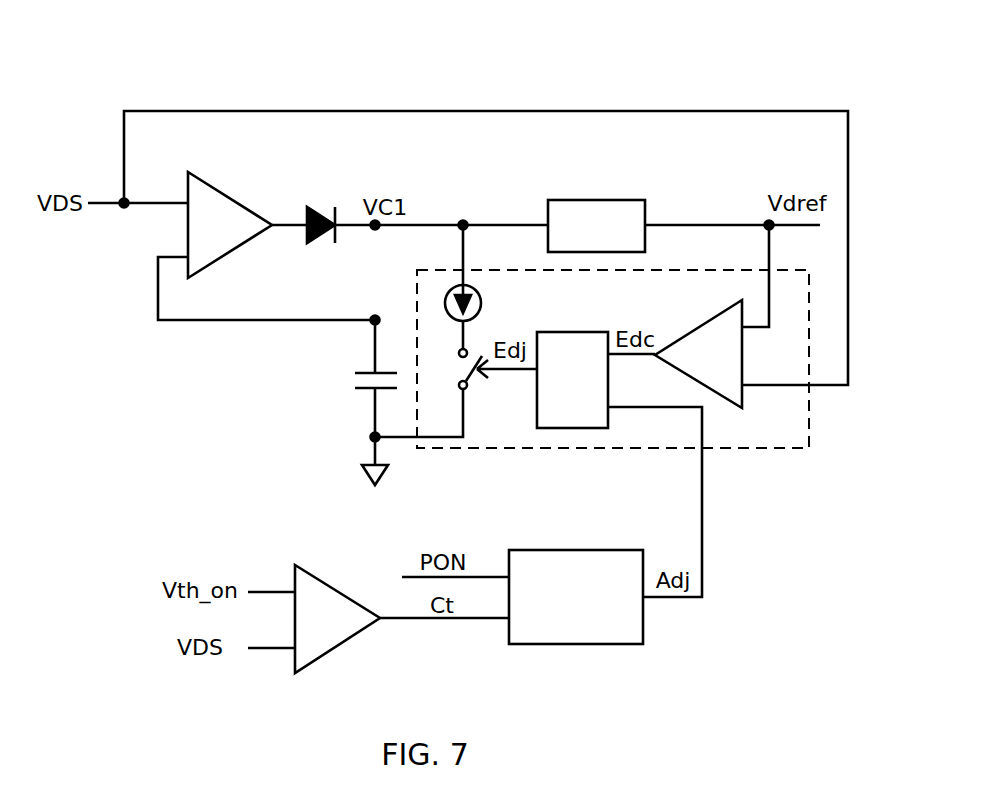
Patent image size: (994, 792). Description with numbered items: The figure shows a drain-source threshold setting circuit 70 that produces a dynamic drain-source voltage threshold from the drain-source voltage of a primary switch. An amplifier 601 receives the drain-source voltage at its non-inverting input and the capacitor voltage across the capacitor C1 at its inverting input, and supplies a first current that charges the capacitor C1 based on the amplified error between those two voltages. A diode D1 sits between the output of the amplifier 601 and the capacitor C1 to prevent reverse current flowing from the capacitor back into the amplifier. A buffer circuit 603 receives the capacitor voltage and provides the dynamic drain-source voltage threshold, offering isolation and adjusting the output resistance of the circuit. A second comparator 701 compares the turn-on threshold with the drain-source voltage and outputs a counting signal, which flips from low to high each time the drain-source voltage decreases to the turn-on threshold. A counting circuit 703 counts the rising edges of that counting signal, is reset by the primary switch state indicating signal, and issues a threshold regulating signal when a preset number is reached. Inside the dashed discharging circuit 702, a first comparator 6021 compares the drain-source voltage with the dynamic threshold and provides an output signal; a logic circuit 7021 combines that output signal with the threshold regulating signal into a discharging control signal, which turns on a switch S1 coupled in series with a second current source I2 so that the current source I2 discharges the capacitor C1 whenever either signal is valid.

The drain-source threshold setting circuit 70 is at (770, 53).
The amplifier 601 is at (266, 246).
The diode D1 is at (427, 210).
The capacitor C1 is at (357, 378).
The buffer circuit 603 is at (597, 200).
The discharging circuit 702 is at (718, 450).
The first comparator 6021 is at (698, 354).
The second current source I2 is at (476, 287).
The switch S1 is at (428, 393).
The logic circuit 7021 is at (563, 332).
The counting circuit 703 is at (573, 550).
The second comparator 701 is at (314, 619).